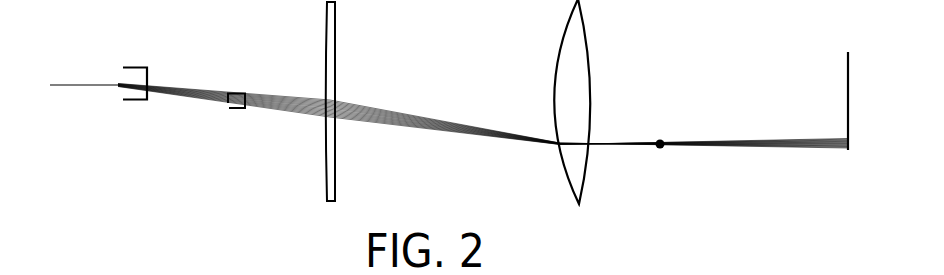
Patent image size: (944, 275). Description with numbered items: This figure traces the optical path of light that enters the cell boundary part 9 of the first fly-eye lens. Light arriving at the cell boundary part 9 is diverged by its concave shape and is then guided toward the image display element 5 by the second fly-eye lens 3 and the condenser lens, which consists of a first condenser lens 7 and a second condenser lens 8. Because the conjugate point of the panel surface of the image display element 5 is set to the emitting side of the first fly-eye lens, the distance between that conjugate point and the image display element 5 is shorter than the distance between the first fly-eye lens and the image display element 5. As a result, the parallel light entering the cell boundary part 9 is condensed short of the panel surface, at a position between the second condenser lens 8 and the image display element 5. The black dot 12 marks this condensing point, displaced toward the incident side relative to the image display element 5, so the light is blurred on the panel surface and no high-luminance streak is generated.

The cell boundary part 9 is at (124, 80).
The second fly-eye lens 3 is at (232, 107).
The first condenser lens 7 is at (323, 185).
The second condenser lens 8 is at (570, 181).
The black dot 12 is at (660, 140).
The image display element 5 is at (847, 72).